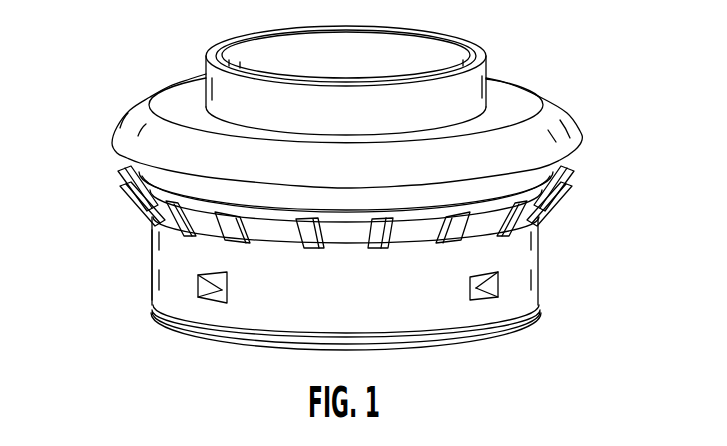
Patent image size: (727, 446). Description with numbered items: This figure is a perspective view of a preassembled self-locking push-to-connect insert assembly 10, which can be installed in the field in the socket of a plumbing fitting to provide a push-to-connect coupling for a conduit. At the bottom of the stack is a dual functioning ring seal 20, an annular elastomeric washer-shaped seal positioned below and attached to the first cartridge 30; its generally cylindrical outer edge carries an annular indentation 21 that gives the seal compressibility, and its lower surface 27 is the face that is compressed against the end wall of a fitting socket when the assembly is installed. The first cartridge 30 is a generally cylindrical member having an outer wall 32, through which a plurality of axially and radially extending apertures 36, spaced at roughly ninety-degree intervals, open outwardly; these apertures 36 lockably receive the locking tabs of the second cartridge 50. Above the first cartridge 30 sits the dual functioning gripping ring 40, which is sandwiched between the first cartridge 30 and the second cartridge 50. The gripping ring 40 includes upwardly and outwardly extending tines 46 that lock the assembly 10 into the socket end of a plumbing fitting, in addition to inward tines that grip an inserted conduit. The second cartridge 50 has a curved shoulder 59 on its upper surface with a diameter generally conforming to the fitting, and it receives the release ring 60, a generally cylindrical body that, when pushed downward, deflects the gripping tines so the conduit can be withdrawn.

The self-locking push-to-connect insert assembly 10 is at (78, 163).
The ring seal 20 is at (165, 325).
The annular indentation 21 is at (497, 334).
The lower surface 27 is at (228, 348).
The first cartridge 30 is at (343, 275).
The outer wall 32 is at (150, 262).
The apertures 36 is at (222, 292).
The gripping ring 40 is at (571, 197).
The tines 46 is at (228, 228).
The second cartridge 50 is at (543, 143).
The curved shoulder 59 is at (567, 113).
The release ring 60 is at (480, 98).